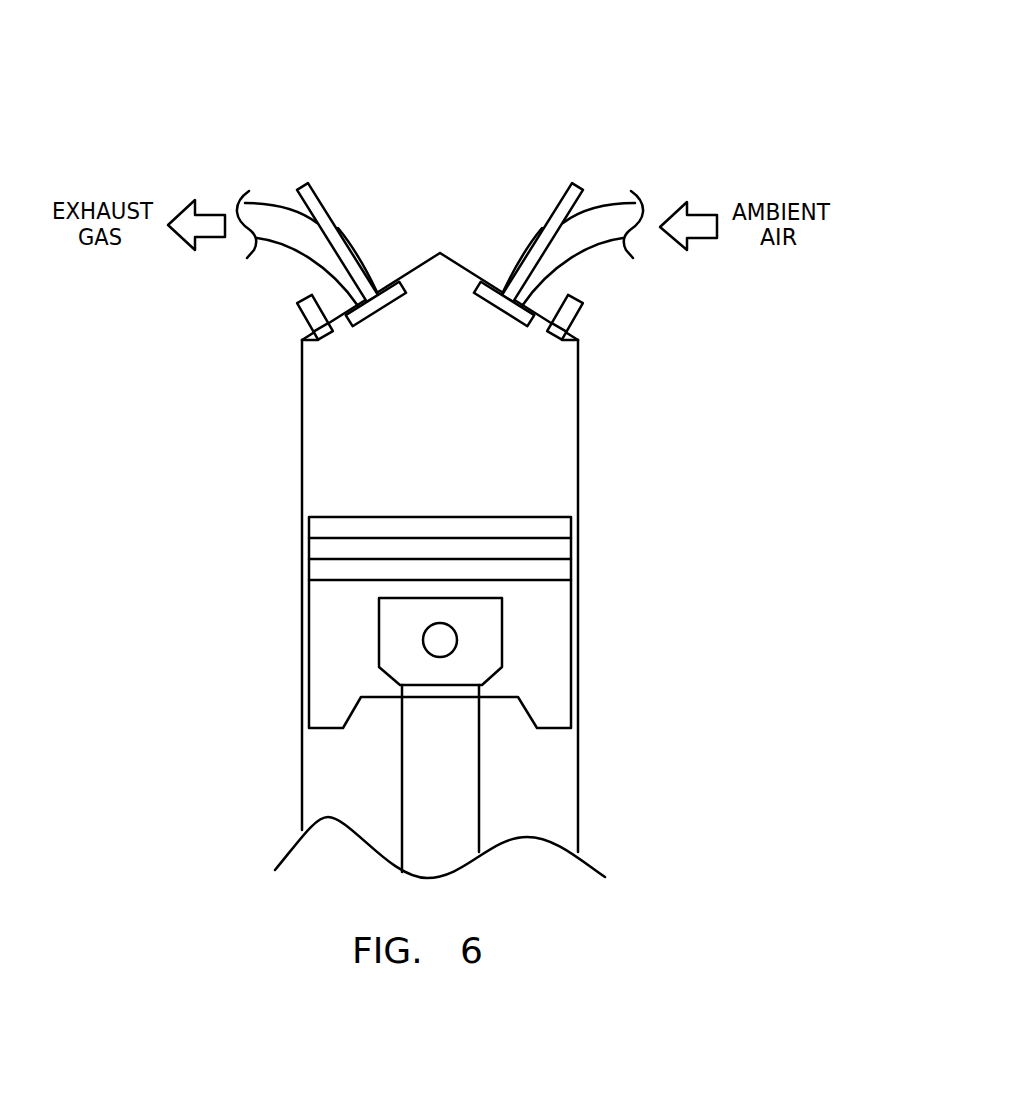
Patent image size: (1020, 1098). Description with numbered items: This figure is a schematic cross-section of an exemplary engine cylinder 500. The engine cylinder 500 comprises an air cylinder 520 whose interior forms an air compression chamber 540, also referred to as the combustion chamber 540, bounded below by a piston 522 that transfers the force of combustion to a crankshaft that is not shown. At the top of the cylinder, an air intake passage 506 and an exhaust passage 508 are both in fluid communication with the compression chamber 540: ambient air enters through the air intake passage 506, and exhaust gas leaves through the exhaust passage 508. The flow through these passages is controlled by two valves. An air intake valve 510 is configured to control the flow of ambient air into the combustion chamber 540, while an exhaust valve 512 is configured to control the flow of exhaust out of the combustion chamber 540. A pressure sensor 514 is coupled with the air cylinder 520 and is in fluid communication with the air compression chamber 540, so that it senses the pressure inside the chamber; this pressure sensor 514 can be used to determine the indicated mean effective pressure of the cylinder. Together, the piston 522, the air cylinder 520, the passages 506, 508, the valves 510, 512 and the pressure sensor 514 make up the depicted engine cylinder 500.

The engine cylinder 500 is at (483, 102).
The air intake passage 506 is at (603, 203).
The exhaust passage 508 is at (277, 203).
The air intake valve 510 is at (577, 185).
The exhaust valve 512 is at (303, 188).
The pressure sensor 514 is at (296, 306).
The air cylinder 520 is at (578, 415).
The piston 522 is at (333, 632).
The compression chamber 540 is at (363, 425).